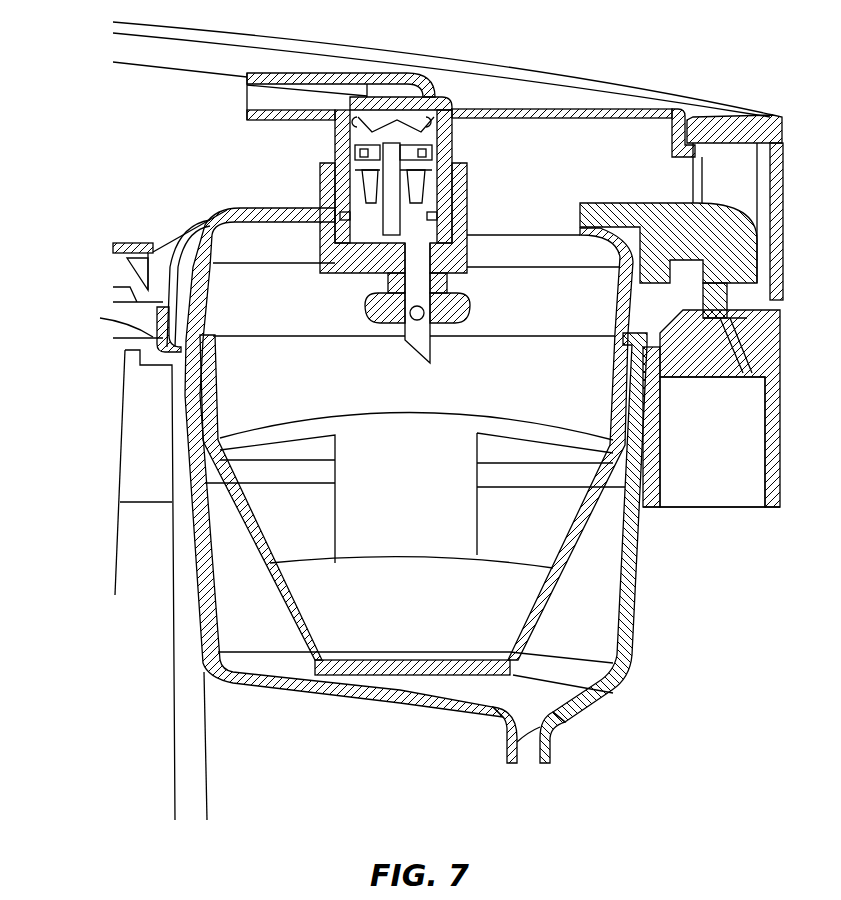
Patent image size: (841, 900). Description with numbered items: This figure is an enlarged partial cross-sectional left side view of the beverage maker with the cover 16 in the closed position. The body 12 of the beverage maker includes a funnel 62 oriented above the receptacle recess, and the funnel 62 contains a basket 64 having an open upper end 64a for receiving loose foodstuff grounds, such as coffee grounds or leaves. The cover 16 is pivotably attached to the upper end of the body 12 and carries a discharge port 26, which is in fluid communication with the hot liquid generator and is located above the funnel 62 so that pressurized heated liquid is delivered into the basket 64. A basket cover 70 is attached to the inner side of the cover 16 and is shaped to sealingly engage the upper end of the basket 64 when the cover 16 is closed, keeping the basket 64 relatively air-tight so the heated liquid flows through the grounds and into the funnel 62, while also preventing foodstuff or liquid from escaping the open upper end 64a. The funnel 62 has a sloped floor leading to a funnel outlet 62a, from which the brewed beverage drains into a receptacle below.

The cover 16 is at (542, 72).
The discharge port 26 is at (418, 292).
The basket cover 70 is at (167, 280).
The open upper end 64a is at (167, 330).
The body 12 is at (117, 528).
The basket 64 is at (587, 522).
The funnel 62 is at (630, 597).
The funnel outlet 62a is at (552, 747).